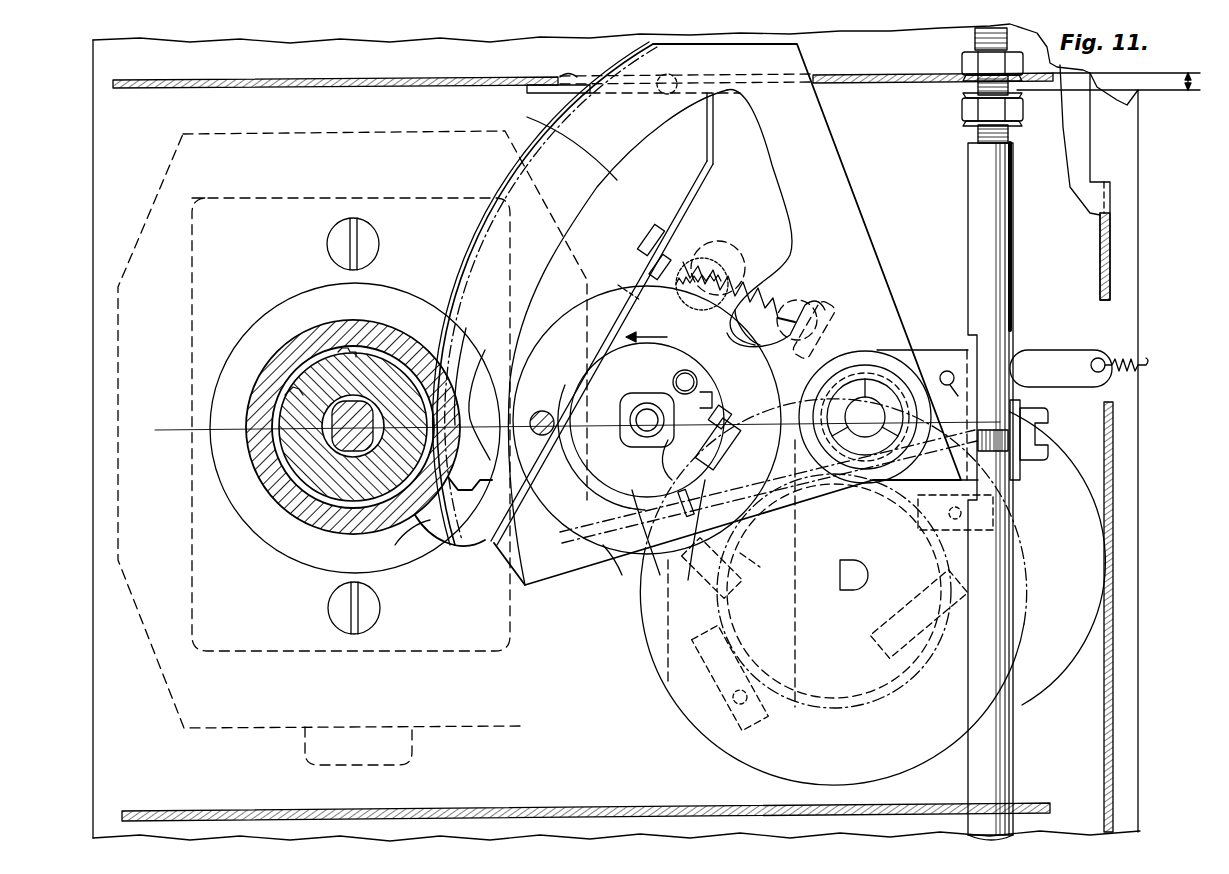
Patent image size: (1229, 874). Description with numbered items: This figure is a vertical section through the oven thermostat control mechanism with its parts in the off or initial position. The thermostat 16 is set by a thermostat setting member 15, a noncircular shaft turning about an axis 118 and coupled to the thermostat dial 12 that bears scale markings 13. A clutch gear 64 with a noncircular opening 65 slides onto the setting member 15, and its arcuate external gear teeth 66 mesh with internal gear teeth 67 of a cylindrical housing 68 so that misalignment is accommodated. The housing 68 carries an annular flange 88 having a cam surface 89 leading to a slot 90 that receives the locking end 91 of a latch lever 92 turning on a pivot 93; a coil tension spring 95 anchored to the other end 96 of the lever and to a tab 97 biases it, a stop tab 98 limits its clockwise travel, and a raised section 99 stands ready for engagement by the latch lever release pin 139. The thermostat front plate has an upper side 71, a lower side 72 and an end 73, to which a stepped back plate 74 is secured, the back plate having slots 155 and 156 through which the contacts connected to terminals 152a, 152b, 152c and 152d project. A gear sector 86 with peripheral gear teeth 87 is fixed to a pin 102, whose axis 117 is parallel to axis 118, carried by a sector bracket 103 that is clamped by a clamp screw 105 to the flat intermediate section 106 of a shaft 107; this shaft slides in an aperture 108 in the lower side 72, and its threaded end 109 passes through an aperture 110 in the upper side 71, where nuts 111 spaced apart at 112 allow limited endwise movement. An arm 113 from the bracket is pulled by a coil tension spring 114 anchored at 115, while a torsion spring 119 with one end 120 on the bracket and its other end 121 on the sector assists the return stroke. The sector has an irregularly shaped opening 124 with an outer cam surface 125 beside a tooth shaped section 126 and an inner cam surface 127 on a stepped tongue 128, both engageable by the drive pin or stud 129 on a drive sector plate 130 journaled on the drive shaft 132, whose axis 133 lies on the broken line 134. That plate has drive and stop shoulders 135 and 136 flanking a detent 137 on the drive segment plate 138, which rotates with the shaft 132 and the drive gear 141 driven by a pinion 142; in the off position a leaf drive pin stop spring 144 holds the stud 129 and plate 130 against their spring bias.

The thermostat dial 12 is at (425, 597).
The scale markings 13 is at (918, 302).
The thermostat setting member 15 is at (342, 445).
The thermostat 16 is at (148, 204).
The clutch gear 64 is at (330, 468).
The noncircular opening 65 is at (362, 442).
The external gear teeth 66 is at (365, 350).
The internal gear teeth 67 is at (300, 385).
The cylindrical housing 68 is at (262, 478).
The upper side 71 is at (350, 80).
The lower side 72 is at (448, 811).
The end 73 is at (1114, 563).
The stepped back plate 74 is at (1140, 310).
The gear sector 86 is at (556, 580).
The gear teeth 87 is at (656, 46).
The annular flange 88 is at (318, 556).
The cam surface 89 is at (475, 492).
The slot 90 is at (475, 540).
The locking end 91 is at (414, 522).
The latch lever 92 is at (520, 500).
The pivot 93 is at (550, 440).
The coil tension spring 95 is at (710, 262).
The other end of latch lever 96 is at (648, 240).
The tab 97 is at (812, 305).
The stop tab 98 is at (652, 264).
The raised section 99 is at (645, 392).
The pin 102 is at (835, 511).
The sector bracket 103 is at (952, 465).
The clamp screw 105 is at (1022, 420).
The flat intermediate section 106 is at (1013, 358).
The shaft 107 is at (968, 193).
The aperture 108 is at (972, 805).
The threaded end 109 is at (973, 38).
The aperture 110 is at (976, 86).
The nuts 111 is at (962, 64).
The spacing 112 is at (1123, 86).
The arm 113 is at (1078, 350).
The coil tension spring 114 is at (1130, 360).
The anchor 115 is at (1142, 368).
The axis 117 is at (885, 375).
The axis 118 is at (354, 410).
The torsion spring 119 is at (822, 485).
The one end of torsion spring 120 is at (946, 370).
The other end of torsion spring 121 is at (690, 575).
The irregularly shaped opening 124 is at (548, 136).
The outer cam surface 125 is at (530, 410).
The tooth shaped section 126 is at (640, 532).
The inner cam surface 127 is at (712, 382).
The stepped tongue 128 is at (766, 334).
The drive pin or stud 129 is at (610, 278).
The drive sector plate 130 is at (700, 312).
The drive shaft 132 is at (676, 457).
The axis 133 is at (647, 408).
The broken line 134 is at (470, 381).
The drive shoulder 135 is at (726, 437).
The stop shoulder 136 is at (637, 420).
The detent 137 is at (692, 496).
The drive segment plate 138 is at (618, 565).
The latch lever release pin 139 is at (716, 400).
The drive gear 141 is at (735, 265).
The pinion 142 is at (722, 250).
The drive pin stop spring 144 is at (706, 158).
The terminal 152a is at (735, 568).
The terminal 152b is at (878, 620).
The terminal 152c is at (918, 524).
The terminal 152d is at (722, 654).
The slot 155 is at (693, 735).
The slot 156 is at (1050, 515).